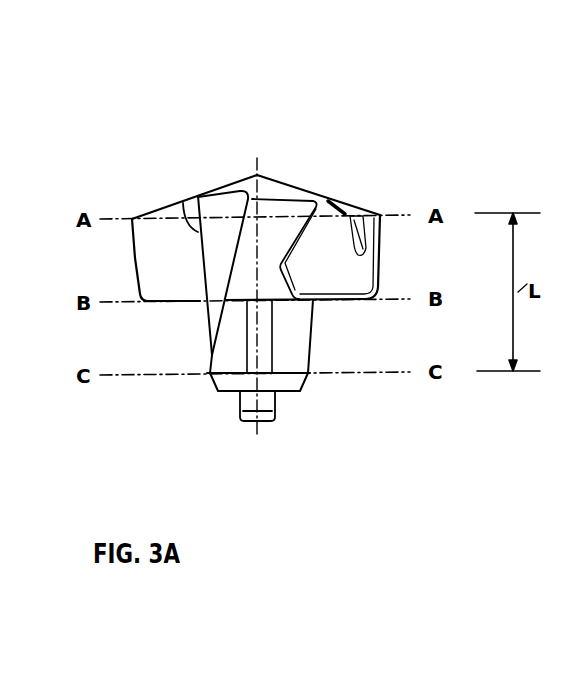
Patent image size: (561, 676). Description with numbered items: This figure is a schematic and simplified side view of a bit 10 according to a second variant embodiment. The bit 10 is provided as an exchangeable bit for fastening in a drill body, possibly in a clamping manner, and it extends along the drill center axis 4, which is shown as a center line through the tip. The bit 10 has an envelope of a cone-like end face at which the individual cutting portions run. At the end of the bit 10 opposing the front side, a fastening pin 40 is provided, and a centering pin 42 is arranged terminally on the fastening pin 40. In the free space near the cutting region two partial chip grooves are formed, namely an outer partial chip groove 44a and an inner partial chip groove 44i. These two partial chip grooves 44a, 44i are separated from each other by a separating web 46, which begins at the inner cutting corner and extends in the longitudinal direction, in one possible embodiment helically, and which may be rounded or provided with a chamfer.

The drill center axis 4 is at (257, 175).
The bit 10 is at (378, 178).
The fastening pin 40 is at (302, 338).
The centering pin 42 is at (277, 415).
The outer partial chip groove 44a is at (166, 231).
The inner partial chip groove 44i is at (227, 204).
The separating web 46 is at (184, 203).